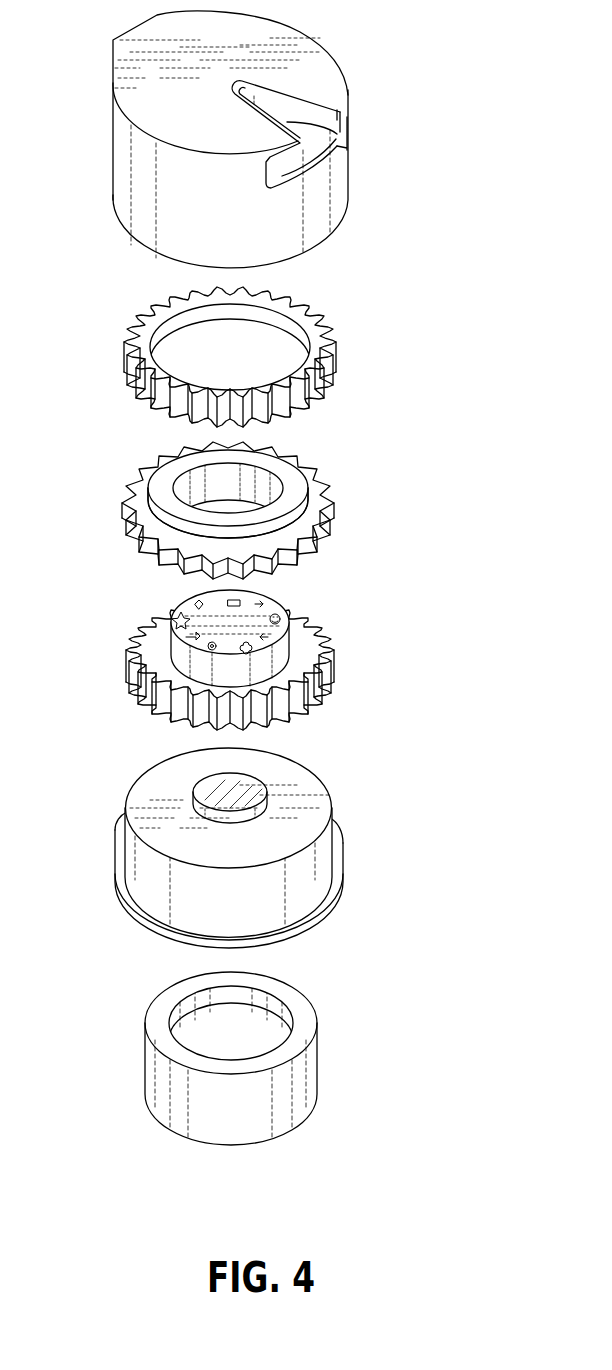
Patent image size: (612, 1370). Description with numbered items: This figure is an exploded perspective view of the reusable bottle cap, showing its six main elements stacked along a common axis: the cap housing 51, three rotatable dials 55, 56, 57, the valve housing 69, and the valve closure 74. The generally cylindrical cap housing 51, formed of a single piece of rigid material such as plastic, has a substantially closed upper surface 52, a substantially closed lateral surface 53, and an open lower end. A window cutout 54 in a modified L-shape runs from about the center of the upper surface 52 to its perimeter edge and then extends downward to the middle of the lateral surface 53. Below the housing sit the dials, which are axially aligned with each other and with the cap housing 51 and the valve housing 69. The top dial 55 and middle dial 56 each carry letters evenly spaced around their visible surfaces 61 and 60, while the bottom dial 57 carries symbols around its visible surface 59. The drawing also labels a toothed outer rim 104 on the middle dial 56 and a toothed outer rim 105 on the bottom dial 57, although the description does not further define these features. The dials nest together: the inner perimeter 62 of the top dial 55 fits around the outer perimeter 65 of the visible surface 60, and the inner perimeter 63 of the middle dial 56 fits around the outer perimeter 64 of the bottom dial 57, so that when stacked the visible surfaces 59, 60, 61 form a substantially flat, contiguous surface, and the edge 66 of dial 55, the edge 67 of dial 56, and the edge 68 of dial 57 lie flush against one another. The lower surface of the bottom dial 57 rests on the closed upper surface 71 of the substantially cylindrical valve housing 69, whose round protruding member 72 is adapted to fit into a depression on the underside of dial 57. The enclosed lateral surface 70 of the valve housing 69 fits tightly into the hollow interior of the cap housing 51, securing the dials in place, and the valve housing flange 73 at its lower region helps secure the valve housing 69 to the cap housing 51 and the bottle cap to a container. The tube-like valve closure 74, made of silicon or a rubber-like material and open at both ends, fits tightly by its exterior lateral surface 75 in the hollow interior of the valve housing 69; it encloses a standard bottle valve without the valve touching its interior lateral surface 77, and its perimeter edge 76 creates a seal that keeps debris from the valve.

The cap housing 51 is at (288, 139).
The upper surface 52 is at (177, 112).
The lateral surface 53 is at (219, 217).
The window cutout 54 is at (313, 134).
The rotatable dial 55 is at (255, 353).
The visible surface 61 is at (318, 320).
The inner perimeter 62 is at (243, 312).
The edge 66 is at (128, 368).
The rotatable dial 56 is at (267, 506).
The visible surface 60 is at (217, 489).
The gear teeth 104 is at (333, 490).
The inner perimeter 63 is at (240, 472).
The outer perimeter 65 is at (143, 518).
The edge 67 is at (143, 545).
The rotatable dial 57 is at (265, 661).
The visible surface 59 is at (218, 643).
The gear teeth 105 is at (330, 653).
The outer perimeter 64 is at (180, 657).
The edge 68 is at (140, 697).
The valve housing 69 is at (289, 848).
The lateral surface 70 is at (211, 912).
The upper surface 71 is at (161, 798).
The round protruding member 72 is at (253, 792).
The valve housing flange 73 is at (325, 903).
The valve closure 74 is at (304, 1050).
The exterior lateral surface 75 is at (215, 1117).
The perimeter edge 76 is at (295, 1003).
The interior lateral surface 77 is at (267, 1007).